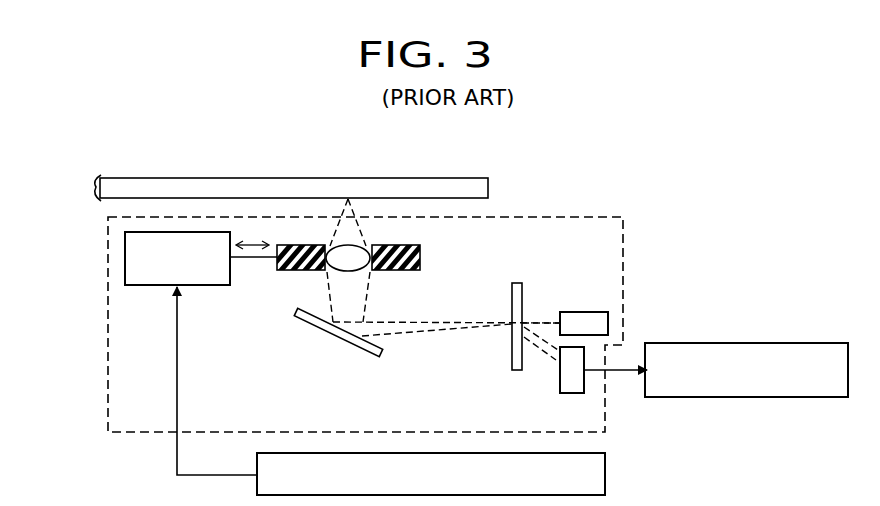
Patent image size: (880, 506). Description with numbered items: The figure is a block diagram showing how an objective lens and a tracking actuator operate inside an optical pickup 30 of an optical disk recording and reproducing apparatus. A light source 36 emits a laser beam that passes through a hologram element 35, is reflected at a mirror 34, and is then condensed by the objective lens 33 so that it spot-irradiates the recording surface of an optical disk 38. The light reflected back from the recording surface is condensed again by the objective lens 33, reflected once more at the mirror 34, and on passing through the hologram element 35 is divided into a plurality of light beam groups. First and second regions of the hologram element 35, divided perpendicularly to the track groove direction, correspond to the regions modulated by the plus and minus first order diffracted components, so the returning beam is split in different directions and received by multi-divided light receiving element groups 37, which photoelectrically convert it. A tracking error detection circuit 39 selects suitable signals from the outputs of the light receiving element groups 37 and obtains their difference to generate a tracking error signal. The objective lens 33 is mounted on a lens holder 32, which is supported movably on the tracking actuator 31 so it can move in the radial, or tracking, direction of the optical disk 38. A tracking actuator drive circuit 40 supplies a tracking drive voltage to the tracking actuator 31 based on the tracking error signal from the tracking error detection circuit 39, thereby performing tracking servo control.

The optical pickup 30 is at (108, 293).
The tracking actuator 31 is at (144, 285).
The lens holder 32 is at (421, 257).
The objective lens 33 is at (351, 245).
The mirror 34 is at (319, 327).
The hologram element 35 is at (515, 283).
The light source 36 is at (585, 312).
The multi-divided light receiving element groups 37 is at (560, 383).
The optical disk 38 is at (427, 177).
The tracking error detection circuit 39 is at (748, 343).
The tracking actuator drive circuit 40 is at (607, 475).